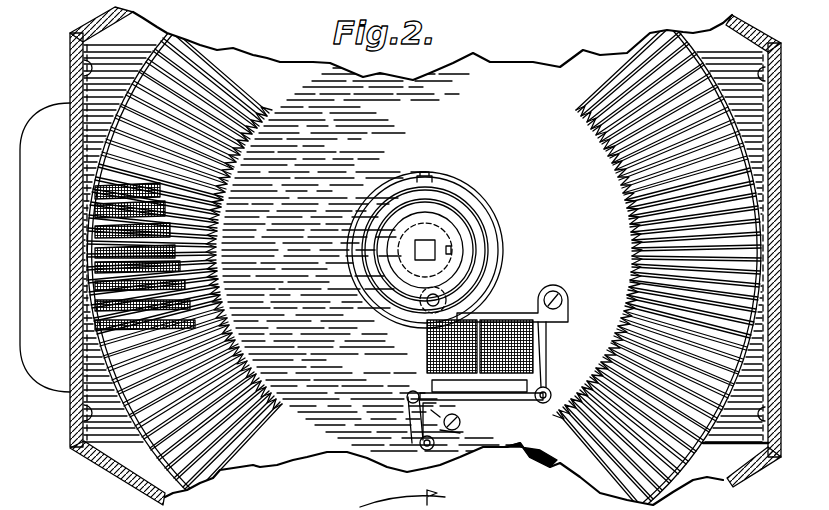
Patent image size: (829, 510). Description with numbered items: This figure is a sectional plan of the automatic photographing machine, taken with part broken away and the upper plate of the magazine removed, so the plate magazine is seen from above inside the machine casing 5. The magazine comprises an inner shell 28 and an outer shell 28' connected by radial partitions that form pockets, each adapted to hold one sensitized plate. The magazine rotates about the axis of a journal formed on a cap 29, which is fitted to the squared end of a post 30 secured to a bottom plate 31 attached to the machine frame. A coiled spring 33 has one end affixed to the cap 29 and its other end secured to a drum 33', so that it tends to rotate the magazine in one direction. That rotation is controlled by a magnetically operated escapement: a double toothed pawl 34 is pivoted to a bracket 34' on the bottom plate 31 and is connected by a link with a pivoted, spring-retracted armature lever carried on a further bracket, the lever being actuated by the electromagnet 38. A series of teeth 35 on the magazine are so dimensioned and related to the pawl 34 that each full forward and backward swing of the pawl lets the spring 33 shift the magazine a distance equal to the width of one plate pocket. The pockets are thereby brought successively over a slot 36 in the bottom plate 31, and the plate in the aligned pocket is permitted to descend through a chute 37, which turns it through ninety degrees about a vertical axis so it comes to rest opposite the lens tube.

The machine casing 5 is at (750, 477).
The inner shell 28 is at (419, 259).
The outer shell 28' is at (728, 266).
The cap 29 is at (447, 258).
The post 30 is at (402, 250).
The bottom plate 31 is at (118, 427).
The coiled spring 33 is at (447, 250).
The drum 33' is at (392, 316).
The double toothed pawl 34 is at (468, 431).
The bracket 34' is at (462, 419).
The teeth 35 is at (627, 270).
The slot 36 is at (107, 247).
The chute 37 is at (110, 317).
The electromagnet 38 is at (427, 352).